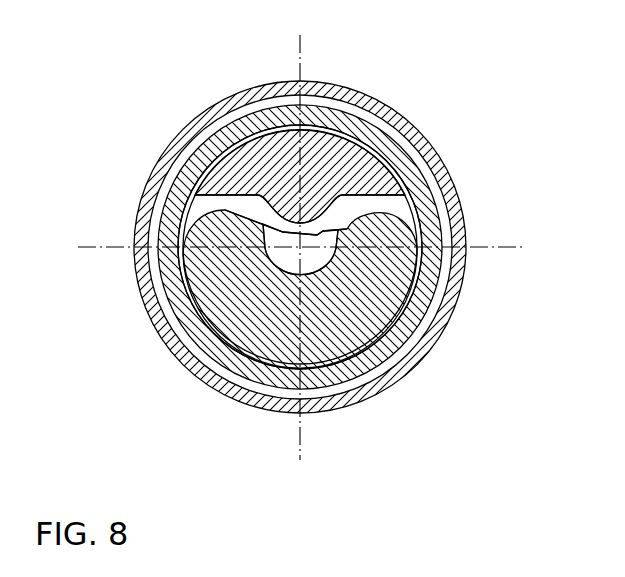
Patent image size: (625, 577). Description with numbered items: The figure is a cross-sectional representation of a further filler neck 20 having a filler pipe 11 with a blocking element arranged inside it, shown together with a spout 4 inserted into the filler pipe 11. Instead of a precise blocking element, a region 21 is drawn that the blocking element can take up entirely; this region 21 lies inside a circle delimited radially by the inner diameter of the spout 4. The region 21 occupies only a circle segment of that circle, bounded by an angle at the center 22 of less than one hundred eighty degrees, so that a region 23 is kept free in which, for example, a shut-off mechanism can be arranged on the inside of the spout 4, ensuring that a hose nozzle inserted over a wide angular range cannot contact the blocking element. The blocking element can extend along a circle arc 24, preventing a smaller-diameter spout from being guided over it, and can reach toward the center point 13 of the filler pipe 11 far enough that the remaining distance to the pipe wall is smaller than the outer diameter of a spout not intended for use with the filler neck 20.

The filler neck 20 is at (425, 73).
The filler pipe 11 is at (455, 212).
The spout 4 is at (415, 307).
The circle arc 24 is at (242, 138).
The region 21 is at (382, 174).
The angle at the center 22 is at (293, 238).
The region kept free 23 is at (348, 335).
The central lumen 13 is at (300, 248).